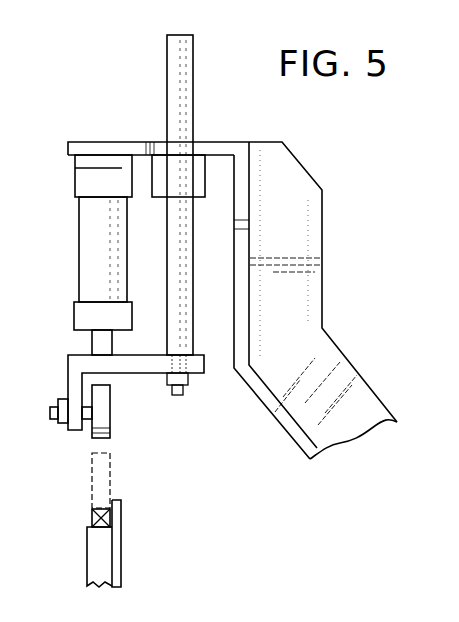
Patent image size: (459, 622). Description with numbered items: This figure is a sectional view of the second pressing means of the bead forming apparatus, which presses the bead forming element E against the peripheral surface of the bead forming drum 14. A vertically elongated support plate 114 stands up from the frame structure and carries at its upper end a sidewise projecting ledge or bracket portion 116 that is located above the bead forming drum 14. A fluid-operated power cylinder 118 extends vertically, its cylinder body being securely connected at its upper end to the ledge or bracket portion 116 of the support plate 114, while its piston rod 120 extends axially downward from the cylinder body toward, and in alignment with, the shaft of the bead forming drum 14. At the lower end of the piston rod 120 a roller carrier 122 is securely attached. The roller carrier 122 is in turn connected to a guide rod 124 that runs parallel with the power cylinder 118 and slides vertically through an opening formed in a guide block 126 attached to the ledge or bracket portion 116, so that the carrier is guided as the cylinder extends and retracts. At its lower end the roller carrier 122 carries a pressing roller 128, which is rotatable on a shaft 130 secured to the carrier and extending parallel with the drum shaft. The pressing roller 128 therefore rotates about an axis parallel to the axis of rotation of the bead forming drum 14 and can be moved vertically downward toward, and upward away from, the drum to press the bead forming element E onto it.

The bead forming drum 14 is at (87, 571).
The bead forming element E is at (92, 518).
The support plate 114 is at (322, 255).
The ledge or bracket portion 116 is at (108, 142).
The fluid-operated power cylinder 118 is at (79, 258).
The piston rod 120 is at (92, 343).
The roller carrier 122 is at (68, 372).
The guide rod 124 is at (212, 291).
The guide block 126 is at (206, 193).
The pressing roller 128 is at (110, 462).
The shaft 130 is at (52, 413).